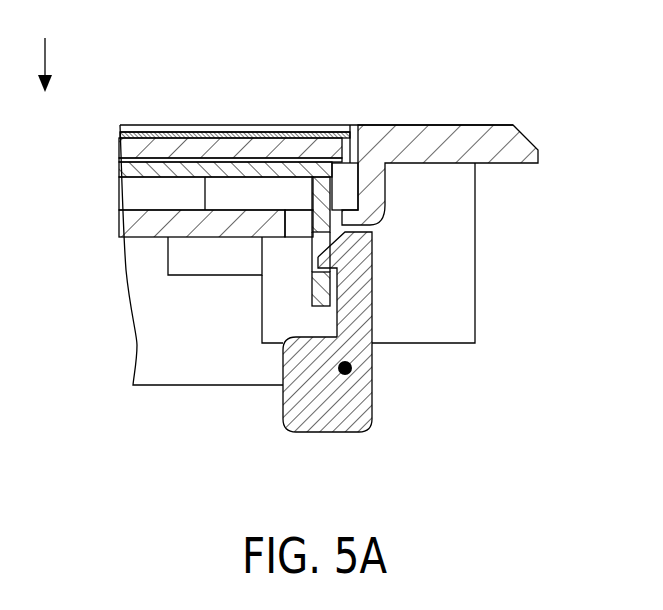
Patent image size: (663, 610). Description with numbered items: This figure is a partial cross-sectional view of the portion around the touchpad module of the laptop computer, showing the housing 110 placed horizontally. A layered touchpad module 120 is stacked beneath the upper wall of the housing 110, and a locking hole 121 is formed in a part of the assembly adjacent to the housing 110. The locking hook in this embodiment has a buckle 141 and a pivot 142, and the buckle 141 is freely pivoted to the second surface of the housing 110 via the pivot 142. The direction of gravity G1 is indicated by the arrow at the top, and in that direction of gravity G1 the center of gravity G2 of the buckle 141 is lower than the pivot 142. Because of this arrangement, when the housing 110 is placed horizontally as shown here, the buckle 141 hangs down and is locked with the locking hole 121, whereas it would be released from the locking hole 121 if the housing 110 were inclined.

The housing 110 is at (445, 250).
The display panel layer 120 is at (204, 148).
The locking hole 121 is at (316, 248).
The buckle 141 is at (328, 412).
The pivot 142 is at (347, 285).
The direction of gravity G1 is at (43, 46).
The center of gravity G2 is at (352, 373).